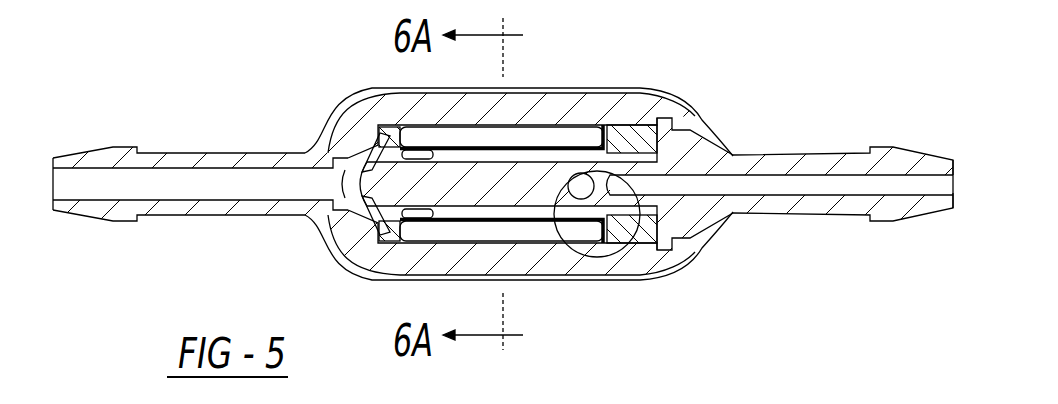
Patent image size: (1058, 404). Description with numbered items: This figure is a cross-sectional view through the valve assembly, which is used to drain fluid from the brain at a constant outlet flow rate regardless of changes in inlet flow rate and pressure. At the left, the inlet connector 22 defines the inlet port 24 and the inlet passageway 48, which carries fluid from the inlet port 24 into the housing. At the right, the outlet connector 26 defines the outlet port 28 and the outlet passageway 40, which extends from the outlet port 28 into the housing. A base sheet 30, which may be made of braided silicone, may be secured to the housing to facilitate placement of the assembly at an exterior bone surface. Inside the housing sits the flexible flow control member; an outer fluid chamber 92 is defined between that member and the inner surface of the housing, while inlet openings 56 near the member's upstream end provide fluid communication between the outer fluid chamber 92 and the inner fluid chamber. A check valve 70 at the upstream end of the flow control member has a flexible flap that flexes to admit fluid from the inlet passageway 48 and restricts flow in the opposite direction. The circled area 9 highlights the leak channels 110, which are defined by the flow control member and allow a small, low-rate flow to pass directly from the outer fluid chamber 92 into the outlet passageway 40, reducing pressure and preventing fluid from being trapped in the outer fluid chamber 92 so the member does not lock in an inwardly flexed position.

The inlet connector 22 is at (160, 152).
The inlet port 24 is at (53, 204).
The outlet connector 26 is at (753, 153).
The outlet port 28 is at (955, 197).
The base sheet 30 is at (353, 88).
The outlet passageway 40 is at (828, 172).
The inlet passageway 48 is at (233, 168).
The inlet openings 56 is at (539, 187).
The check valve 70 is at (362, 168).
The outer fluid chamber 92 is at (505, 138).
The leak channels 110 is at (603, 125).
The area 9 is at (620, 257).